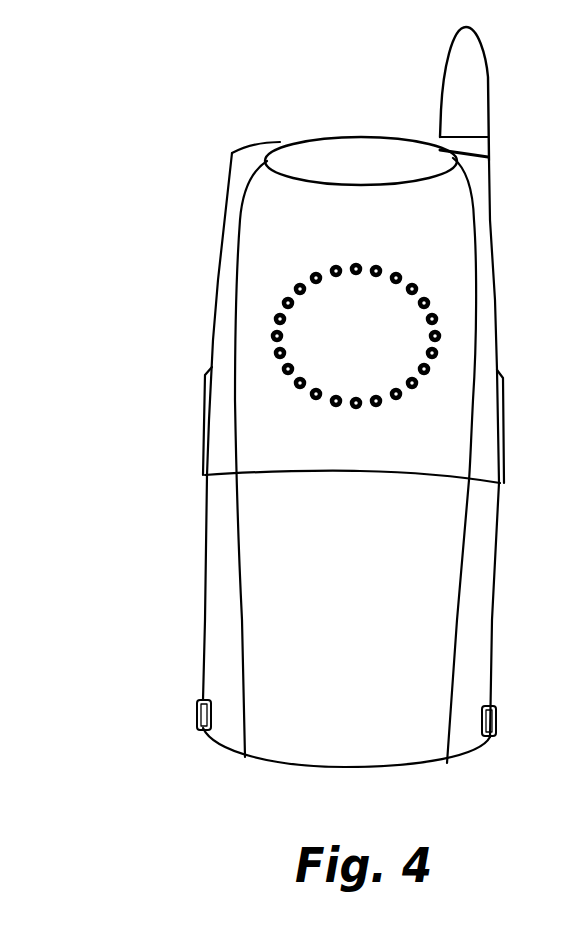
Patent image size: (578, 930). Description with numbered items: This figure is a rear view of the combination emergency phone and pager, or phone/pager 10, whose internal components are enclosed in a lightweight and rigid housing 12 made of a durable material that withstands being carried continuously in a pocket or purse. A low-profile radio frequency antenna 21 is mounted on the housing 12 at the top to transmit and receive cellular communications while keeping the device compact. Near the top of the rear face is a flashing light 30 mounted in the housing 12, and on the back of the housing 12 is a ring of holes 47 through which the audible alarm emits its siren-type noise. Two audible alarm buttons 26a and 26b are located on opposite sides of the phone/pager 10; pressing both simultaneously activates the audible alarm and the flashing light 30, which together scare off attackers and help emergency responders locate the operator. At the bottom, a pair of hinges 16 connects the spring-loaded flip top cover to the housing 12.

The phone/pager 10 is at (142, 167).
The housing 12 is at (221, 235).
The radio frequency antenna 21 is at (489, 75).
The flashing light 30 is at (287, 143).
The holes 47 is at (434, 321).
The audible alarm button 26a is at (504, 410).
The audible alarm button 26b is at (200, 410).
The hinges 16 is at (197, 717).